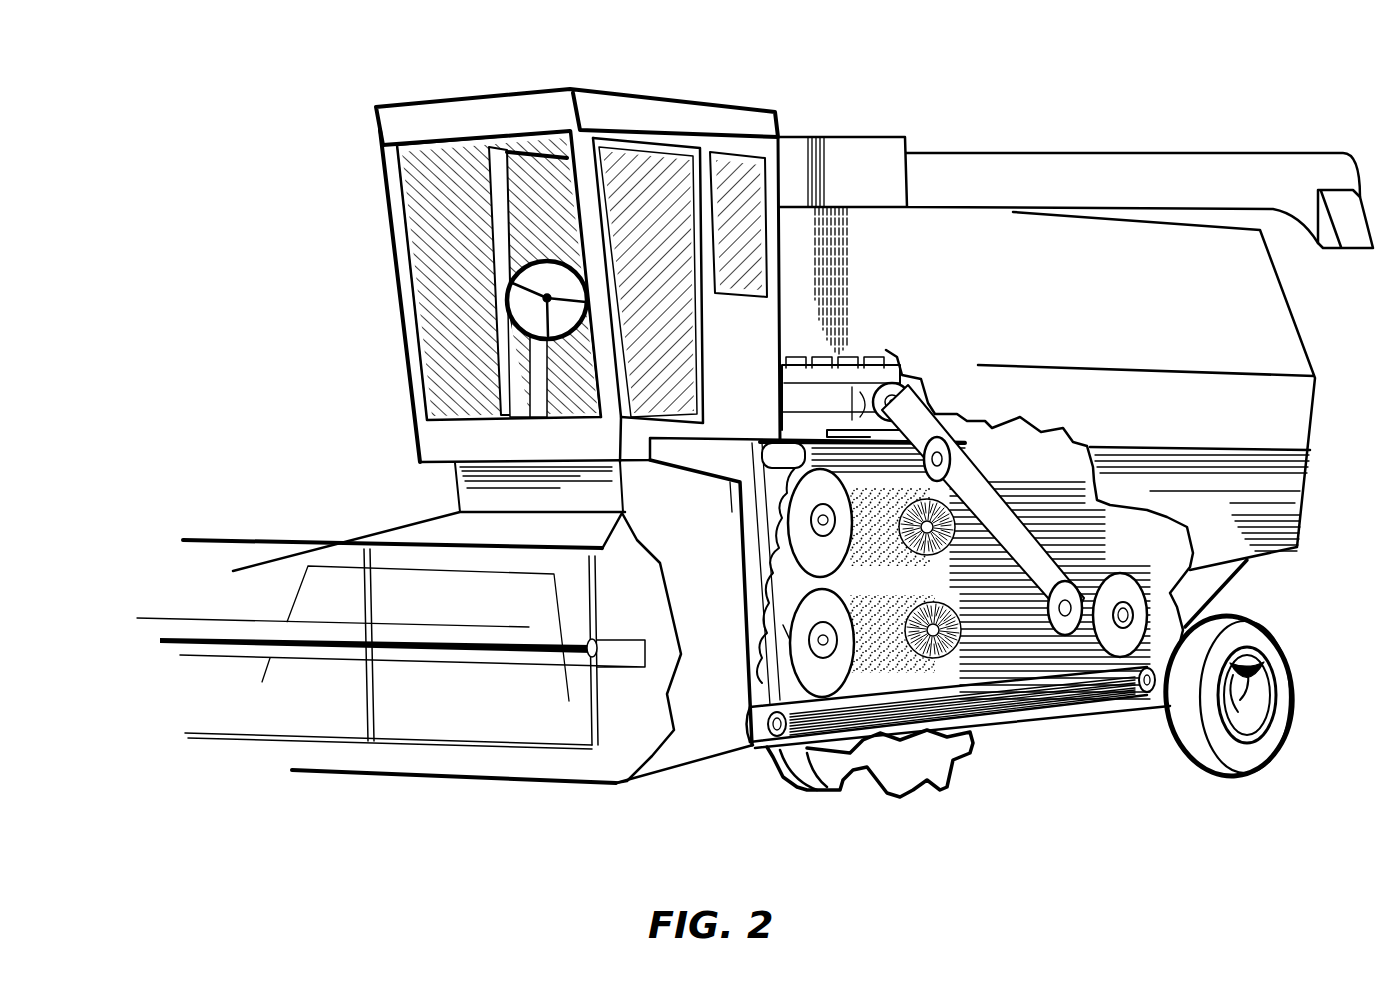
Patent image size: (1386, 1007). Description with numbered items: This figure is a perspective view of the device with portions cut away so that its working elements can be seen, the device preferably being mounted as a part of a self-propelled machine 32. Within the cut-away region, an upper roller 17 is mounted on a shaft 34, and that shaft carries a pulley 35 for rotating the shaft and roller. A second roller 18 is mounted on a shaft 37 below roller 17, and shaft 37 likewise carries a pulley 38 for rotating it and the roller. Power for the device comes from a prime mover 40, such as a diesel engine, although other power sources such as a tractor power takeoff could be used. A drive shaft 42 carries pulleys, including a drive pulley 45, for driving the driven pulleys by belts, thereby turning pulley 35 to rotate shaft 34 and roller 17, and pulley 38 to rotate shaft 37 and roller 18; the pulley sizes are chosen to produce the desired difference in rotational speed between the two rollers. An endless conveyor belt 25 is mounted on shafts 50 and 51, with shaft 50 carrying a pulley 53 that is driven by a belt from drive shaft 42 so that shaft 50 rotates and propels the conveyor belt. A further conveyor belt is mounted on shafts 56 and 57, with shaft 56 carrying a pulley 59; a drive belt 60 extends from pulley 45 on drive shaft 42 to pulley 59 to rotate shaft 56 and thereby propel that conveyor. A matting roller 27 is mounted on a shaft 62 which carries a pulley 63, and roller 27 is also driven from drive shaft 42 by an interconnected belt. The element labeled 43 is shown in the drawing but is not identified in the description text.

The roller 17 is at (870, 523).
The roller 18 is at (875, 643).
The endless conveyor belt 25 is at (959, 716).
The matting roller 27 is at (1135, 612).
The self-propelled machine 32 is at (1340, 450).
The shaft 34 is at (870, 523).
The pulley 35 is at (829, 494).
The shaft 37 is at (829, 616).
The pulley 38 is at (783, 630).
The prime mover 40 is at (830, 416).
The drive shaft 42 is at (893, 384).
The header bottom frame 43 is at (766, 760).
The drive pulley 45 is at (916, 381).
The shaft 50 is at (753, 757).
The shaft 51 is at (959, 716).
The pulley 53 is at (797, 731).
The shaft 56 is at (1081, 581).
The shaft 57 is at (950, 458).
The pulley 59 is at (1062, 588).
The drive belt 60 is at (948, 421).
The shaft 62 is at (1135, 612).
The pulley 63 is at (1130, 597).